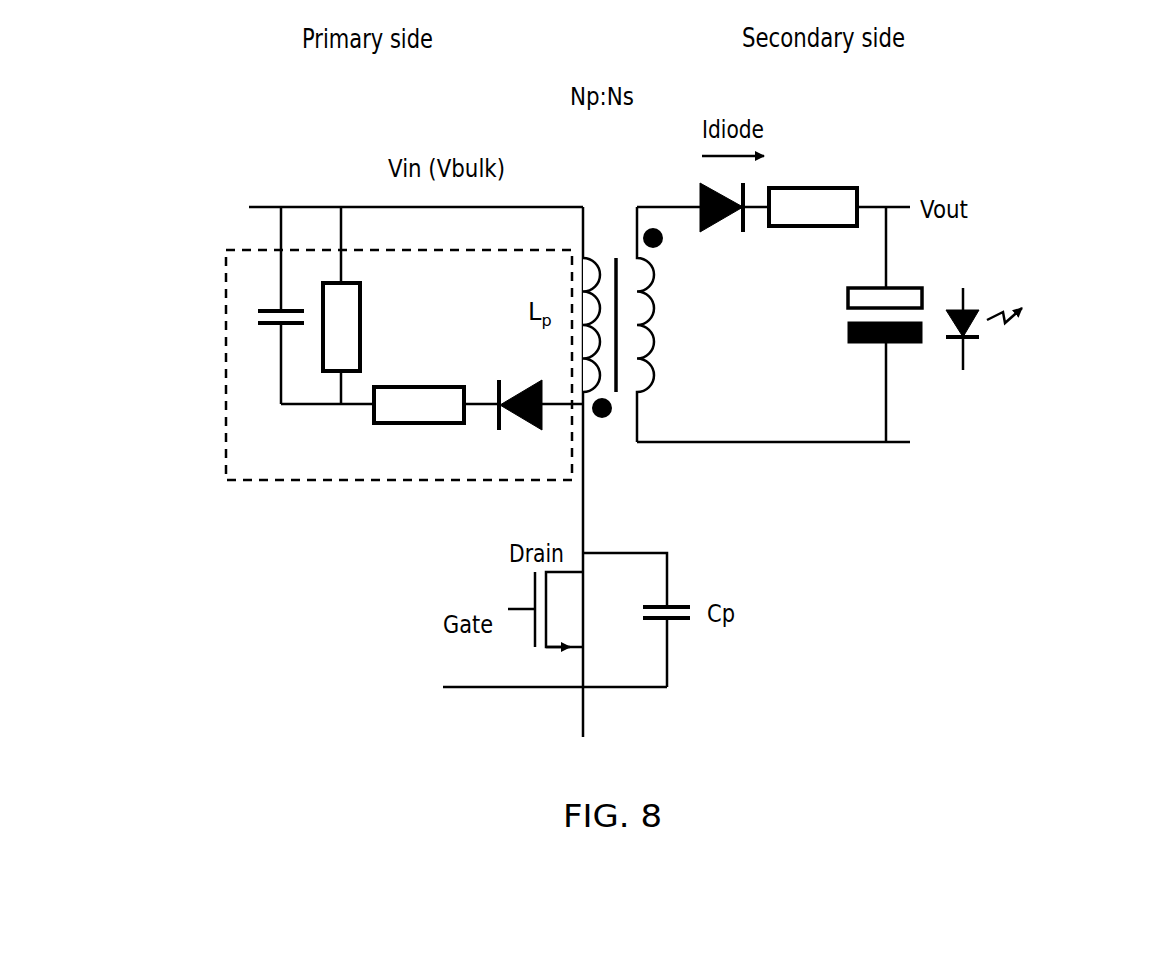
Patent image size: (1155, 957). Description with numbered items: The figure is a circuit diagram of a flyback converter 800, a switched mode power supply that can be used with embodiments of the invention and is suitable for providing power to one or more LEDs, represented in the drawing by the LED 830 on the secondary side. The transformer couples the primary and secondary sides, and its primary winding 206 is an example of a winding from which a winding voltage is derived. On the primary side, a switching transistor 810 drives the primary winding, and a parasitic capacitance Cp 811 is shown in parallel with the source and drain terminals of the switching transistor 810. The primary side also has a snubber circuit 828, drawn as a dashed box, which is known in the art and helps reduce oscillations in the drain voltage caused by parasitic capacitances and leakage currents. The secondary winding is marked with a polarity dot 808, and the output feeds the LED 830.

The flyback converter 800 is at (233, 212).
The primary winding 206 is at (604, 202).
The secondary winding polarity dot 808 is at (668, 259).
The LED 830 is at (994, 360).
The snubber circuit 828 is at (258, 482).
The parasitic capacitance Cp 811 is at (677, 620).
The switching transistor 810 is at (555, 653).